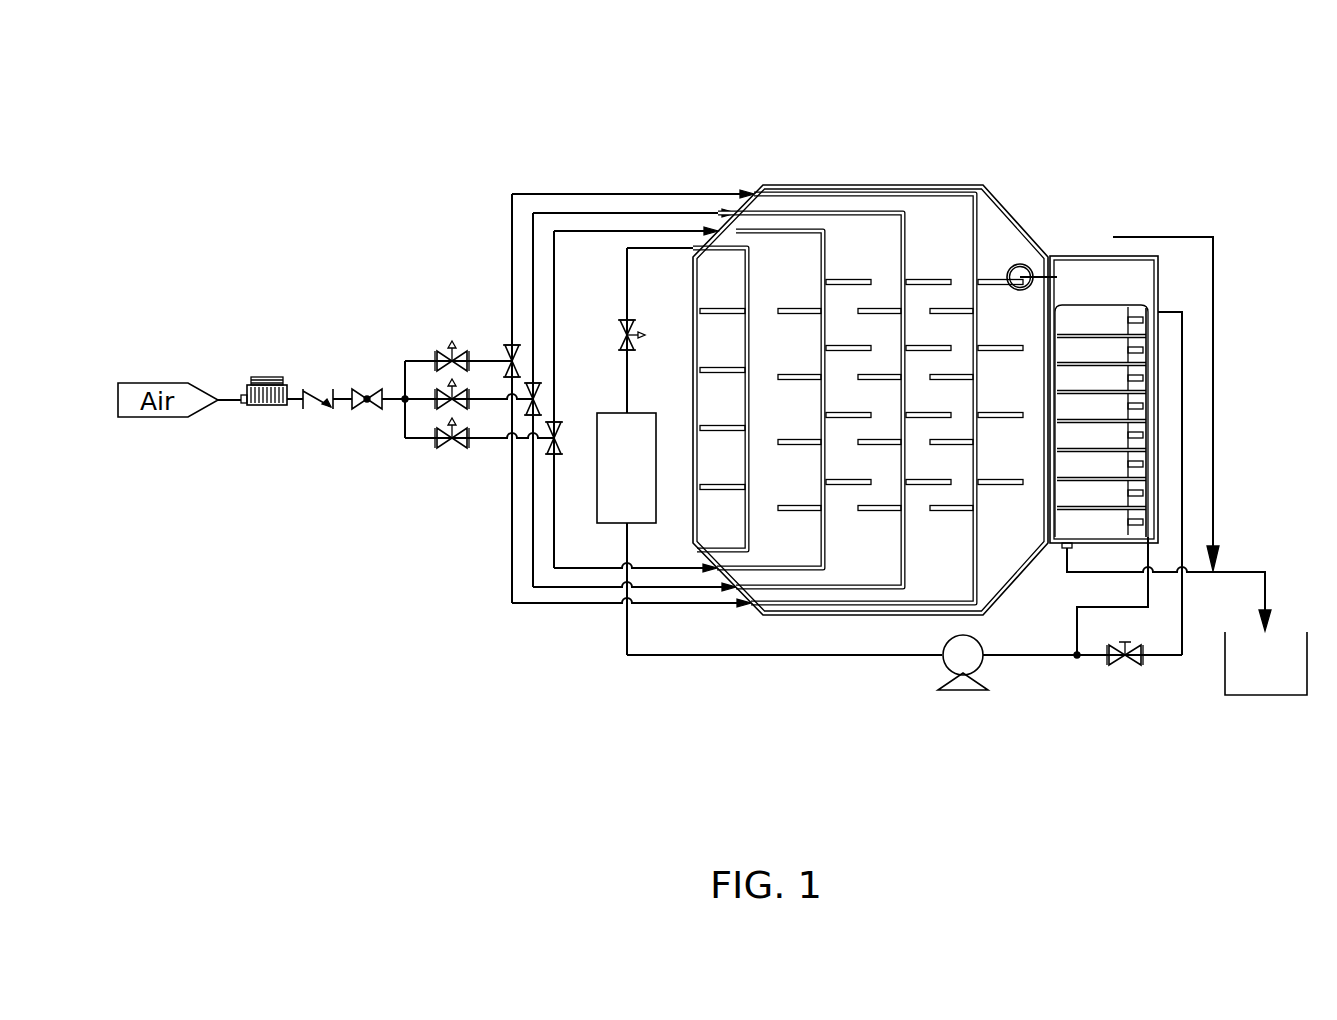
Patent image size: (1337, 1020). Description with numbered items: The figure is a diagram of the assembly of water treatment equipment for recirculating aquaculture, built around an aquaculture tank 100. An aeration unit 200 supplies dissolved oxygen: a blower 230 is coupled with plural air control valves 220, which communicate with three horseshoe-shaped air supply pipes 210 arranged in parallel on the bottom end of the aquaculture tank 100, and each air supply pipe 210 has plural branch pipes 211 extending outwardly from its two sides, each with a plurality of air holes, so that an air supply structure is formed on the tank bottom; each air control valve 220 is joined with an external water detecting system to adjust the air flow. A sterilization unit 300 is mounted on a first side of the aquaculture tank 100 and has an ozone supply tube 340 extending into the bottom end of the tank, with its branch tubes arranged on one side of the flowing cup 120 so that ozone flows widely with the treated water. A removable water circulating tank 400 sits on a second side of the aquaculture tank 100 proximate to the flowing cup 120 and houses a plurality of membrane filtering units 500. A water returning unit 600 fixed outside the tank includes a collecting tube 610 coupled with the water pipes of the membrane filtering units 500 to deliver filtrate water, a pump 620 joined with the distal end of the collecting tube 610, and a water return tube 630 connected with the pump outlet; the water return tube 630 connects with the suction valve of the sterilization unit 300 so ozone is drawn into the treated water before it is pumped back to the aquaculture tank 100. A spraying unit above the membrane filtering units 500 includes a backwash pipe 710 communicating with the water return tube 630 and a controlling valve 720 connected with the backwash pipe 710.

The aquaculture tank 100 is at (893, 172).
The flowing cup 120 is at (1019, 264).
The aeration unit 200 is at (484, 381).
The air supply pipe 210 is at (772, 232).
The branch pipe 211 is at (1004, 486).
The air control valve 220 is at (447, 443).
The blower 230 is at (265, 373).
The sterilization unit 300 is at (608, 532).
The ozone supply tube 340 is at (708, 250).
The water circulating tank 400 is at (1083, 245).
The membrane filtering unit 500 is at (1116, 306).
The water returning unit 600 is at (904, 708).
The collecting tube 610 is at (1062, 637).
The pump 620 is at (965, 685).
The water return tube 630 is at (745, 660).
The backwash pipe 710 is at (1182, 636).
The controlling valve 720 is at (1128, 667).